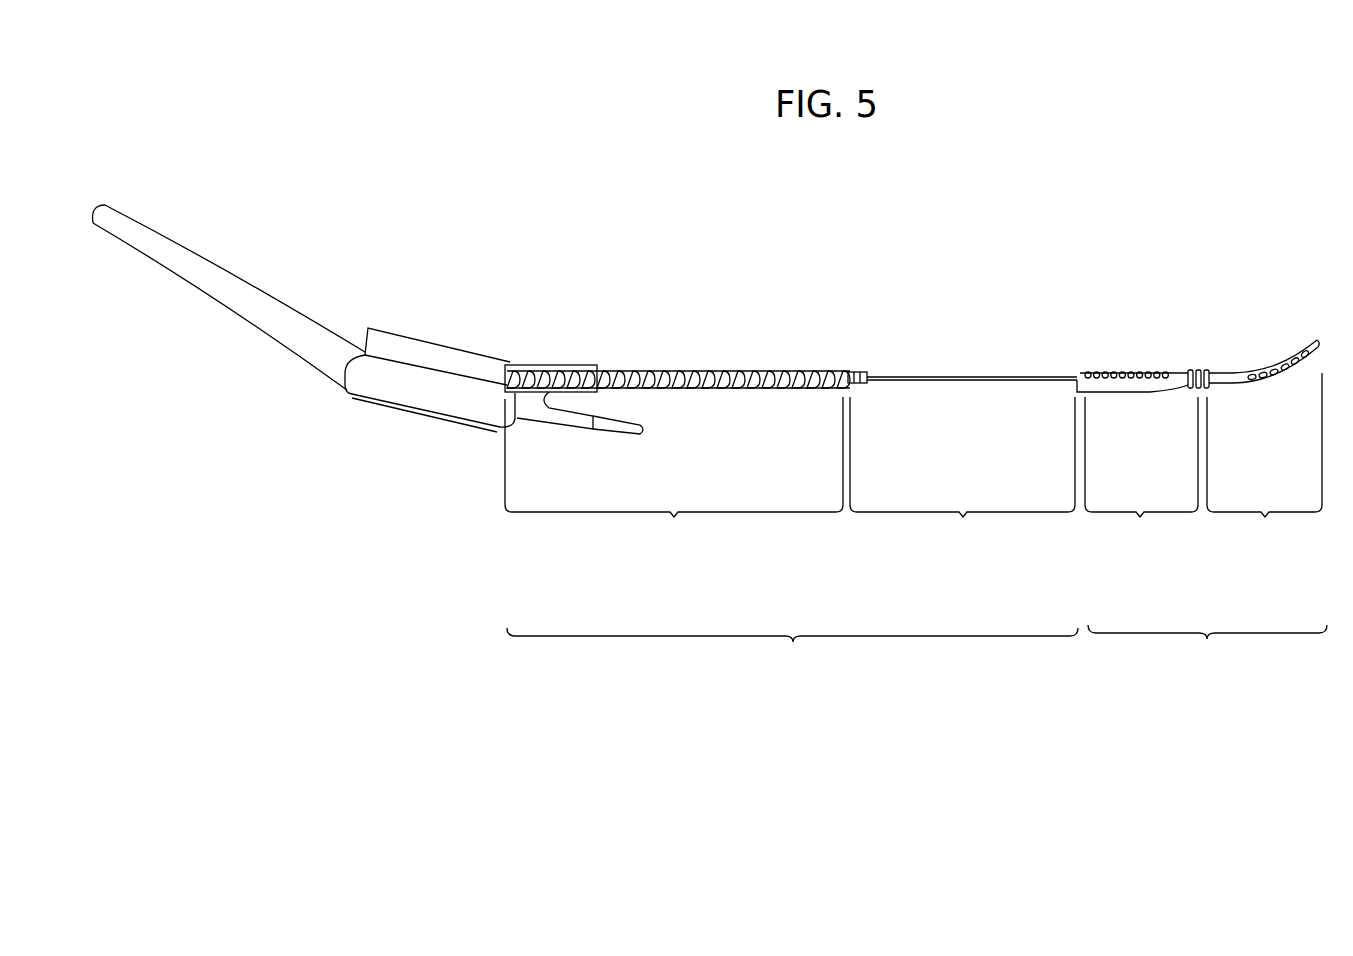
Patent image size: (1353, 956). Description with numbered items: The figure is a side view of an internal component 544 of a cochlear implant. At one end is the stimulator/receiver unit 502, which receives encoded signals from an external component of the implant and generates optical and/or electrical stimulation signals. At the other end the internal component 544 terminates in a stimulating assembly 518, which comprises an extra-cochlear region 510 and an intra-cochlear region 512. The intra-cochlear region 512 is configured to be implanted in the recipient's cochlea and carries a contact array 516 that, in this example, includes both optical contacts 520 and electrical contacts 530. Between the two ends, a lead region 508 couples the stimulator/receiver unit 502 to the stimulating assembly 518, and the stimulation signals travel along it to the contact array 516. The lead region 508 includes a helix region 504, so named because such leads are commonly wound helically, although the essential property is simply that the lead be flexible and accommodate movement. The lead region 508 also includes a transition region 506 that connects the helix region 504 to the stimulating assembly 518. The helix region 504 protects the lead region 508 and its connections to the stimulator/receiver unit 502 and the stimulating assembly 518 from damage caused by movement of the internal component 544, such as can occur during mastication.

The stimulator/receiver unit 502 is at (393, 389).
The helix region 504 is at (686, 470).
The transition region 506 is at (963, 476).
The lead region 508 is at (792, 661).
The extra-cochlear region 510 is at (1157, 438).
The intra-cochlear region 512 is at (1269, 414).
The contact array 516 is at (1247, 300).
The stimulating assembly 518 is at (1207, 660).
The optical contact 520 is at (1238, 375).
The electrical contact 530 is at (1308, 350).
The internal component 544 is at (498, 200).